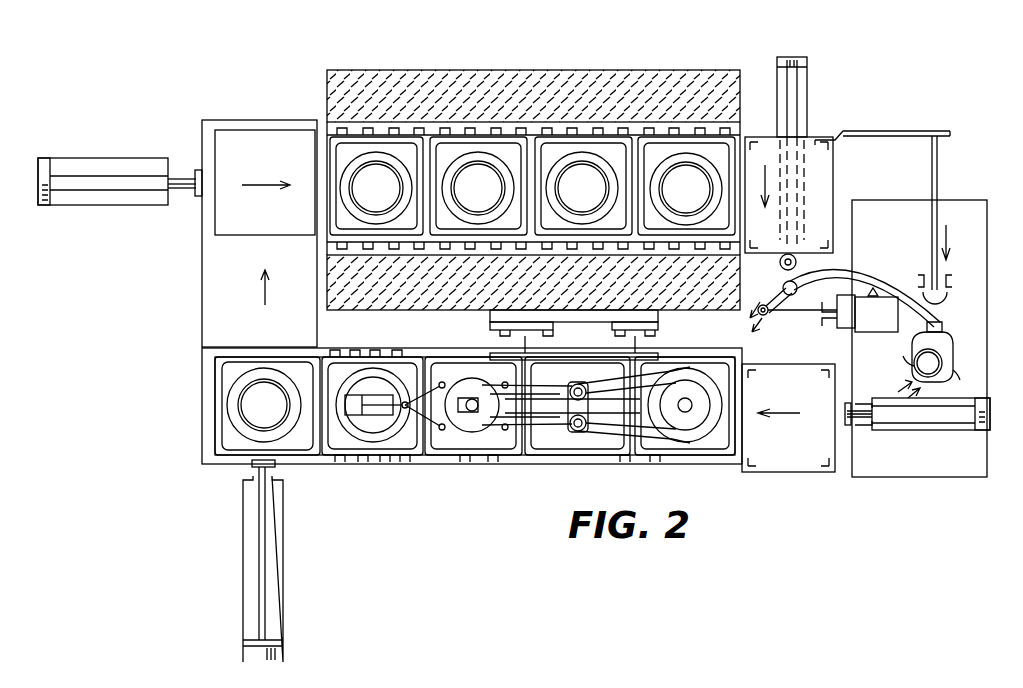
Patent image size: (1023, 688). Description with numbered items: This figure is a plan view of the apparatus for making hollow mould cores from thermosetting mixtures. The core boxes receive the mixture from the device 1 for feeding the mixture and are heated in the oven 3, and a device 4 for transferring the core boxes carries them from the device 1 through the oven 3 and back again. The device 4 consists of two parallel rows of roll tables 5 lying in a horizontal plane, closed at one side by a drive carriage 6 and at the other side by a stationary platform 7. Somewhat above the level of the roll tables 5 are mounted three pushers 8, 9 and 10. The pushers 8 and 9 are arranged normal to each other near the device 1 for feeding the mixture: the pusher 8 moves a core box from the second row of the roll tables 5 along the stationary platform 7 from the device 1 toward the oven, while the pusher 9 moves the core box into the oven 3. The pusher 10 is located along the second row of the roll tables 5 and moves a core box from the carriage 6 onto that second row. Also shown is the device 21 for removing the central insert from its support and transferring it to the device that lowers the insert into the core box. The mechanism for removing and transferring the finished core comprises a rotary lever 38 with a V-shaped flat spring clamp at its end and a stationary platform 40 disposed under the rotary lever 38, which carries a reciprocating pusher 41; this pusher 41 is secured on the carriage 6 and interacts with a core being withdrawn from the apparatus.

The device for feeding the mixture 1 is at (230, 423).
The oven 3 is at (327, 90).
The device for transferring the core boxes 4 is at (200, 378).
The roll tables 5 is at (380, 464).
The drive carriage 6 is at (770, 145).
The stationary platform 7 is at (210, 283).
The pusher 8 is at (283, 578).
The pusher 9 is at (121, 160).
The pusher 10 is at (962, 432).
The device for removing the central insert 21 is at (549, 447).
The rotary lever 38 is at (866, 278).
The stationary platform 40 is at (962, 208).
The reciprocating pusher 41 is at (946, 294).